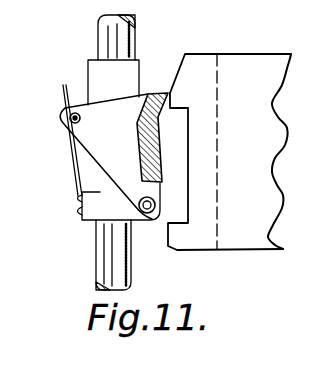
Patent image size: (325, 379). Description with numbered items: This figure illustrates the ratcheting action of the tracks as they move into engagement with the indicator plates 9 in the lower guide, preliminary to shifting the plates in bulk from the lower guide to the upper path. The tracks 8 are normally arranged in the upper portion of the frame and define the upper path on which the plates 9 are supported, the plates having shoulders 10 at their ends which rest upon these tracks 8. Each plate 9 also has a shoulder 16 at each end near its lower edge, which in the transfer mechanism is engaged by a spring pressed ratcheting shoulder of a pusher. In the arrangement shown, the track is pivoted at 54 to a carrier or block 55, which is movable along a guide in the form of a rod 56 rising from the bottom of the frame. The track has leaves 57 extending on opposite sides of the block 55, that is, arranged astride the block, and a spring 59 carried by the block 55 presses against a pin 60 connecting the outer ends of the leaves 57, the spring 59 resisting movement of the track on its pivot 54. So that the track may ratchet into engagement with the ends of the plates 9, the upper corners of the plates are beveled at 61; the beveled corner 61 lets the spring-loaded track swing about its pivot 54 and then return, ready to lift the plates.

The guides or tracks 8 is at (161, 96).
The indicator plates 9 is at (263, 143).
The shoulders 10 is at (180, 109).
The shoulder 16 is at (173, 234).
The pivot 54 is at (144, 198).
The carriers or blocks 55 is at (100, 192).
The rods 56 is at (113, 37).
The leaves 57 is at (80, 135).
The springs 59 is at (78, 158).
The pin 60 is at (71, 116).
The beveled upper corners 61 is at (180, 60).